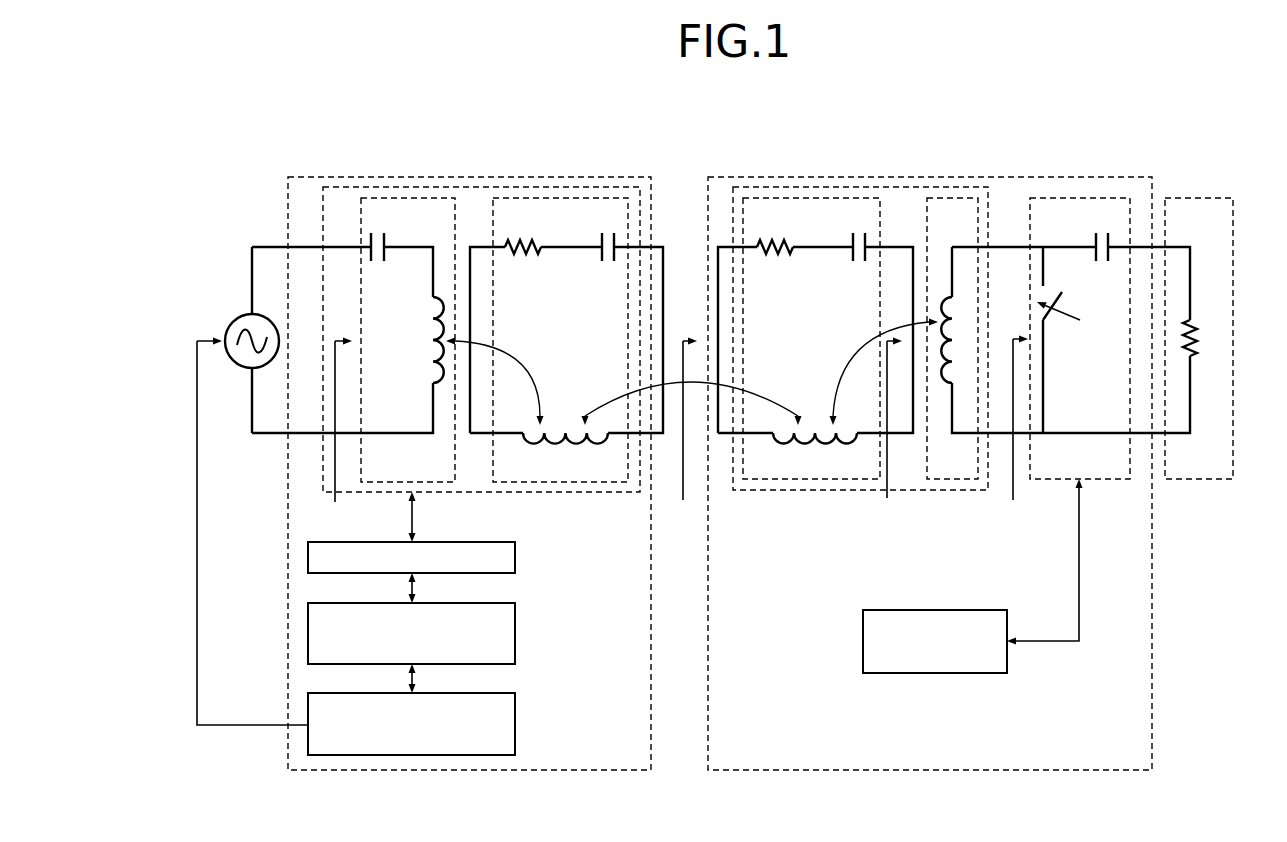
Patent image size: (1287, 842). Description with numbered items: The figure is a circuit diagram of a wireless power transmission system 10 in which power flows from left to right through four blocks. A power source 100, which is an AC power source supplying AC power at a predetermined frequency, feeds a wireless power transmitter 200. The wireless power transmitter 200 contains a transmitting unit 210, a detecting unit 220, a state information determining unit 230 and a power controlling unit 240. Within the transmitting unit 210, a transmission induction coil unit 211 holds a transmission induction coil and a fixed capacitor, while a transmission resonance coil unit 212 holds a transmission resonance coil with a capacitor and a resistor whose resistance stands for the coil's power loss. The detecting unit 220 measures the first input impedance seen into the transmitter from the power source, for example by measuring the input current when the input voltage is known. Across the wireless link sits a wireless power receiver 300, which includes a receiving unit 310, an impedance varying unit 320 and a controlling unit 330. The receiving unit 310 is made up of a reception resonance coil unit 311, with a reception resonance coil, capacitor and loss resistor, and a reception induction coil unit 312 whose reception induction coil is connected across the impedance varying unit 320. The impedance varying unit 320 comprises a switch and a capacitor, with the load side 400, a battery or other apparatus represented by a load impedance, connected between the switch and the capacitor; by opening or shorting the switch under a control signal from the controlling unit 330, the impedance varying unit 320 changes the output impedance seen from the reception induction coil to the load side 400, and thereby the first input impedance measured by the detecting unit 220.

The wireless power transmission system 10 is at (322, 87).
The power source 100 is at (232, 320).
The wireless power transmitter 200 is at (370, 176).
The transmitting unit 210 is at (474, 187).
The transmission induction coil unit 211 is at (410, 197).
The transmission resonance coil unit 212 is at (566, 197).
The detecting unit 220 is at (515, 557).
The state information determining unit 230 is at (515, 633).
The power controlling unit 240 is at (515, 725).
The wireless power receiver 300 is at (764, 176).
The receiving unit 310 is at (860, 187).
The reception resonance coil unit 311 is at (808, 197).
The reception induction coil unit 312 is at (952, 197).
The impedance varying unit 320 is at (1080, 197).
The controlling unit 330 is at (863, 641).
The load side 400 is at (1199, 197).